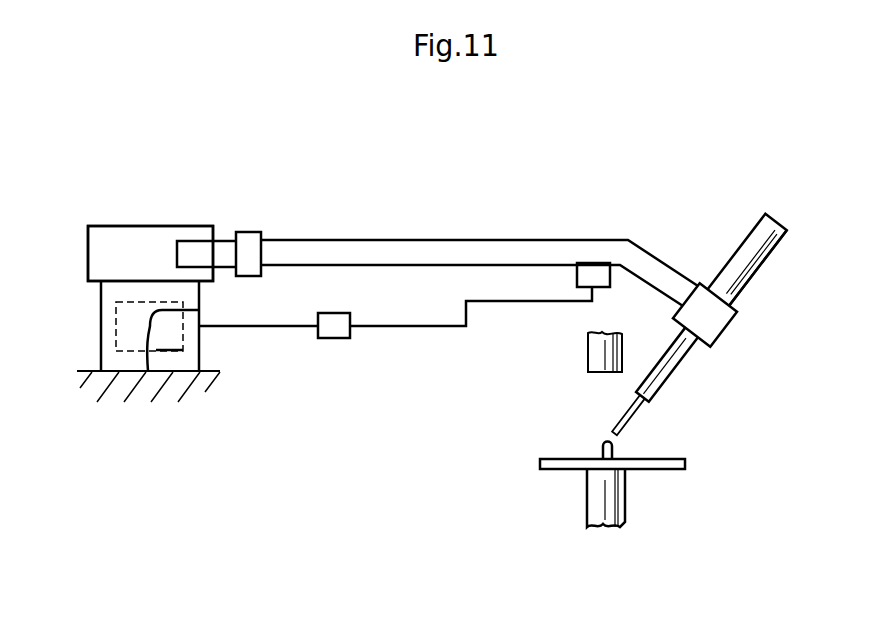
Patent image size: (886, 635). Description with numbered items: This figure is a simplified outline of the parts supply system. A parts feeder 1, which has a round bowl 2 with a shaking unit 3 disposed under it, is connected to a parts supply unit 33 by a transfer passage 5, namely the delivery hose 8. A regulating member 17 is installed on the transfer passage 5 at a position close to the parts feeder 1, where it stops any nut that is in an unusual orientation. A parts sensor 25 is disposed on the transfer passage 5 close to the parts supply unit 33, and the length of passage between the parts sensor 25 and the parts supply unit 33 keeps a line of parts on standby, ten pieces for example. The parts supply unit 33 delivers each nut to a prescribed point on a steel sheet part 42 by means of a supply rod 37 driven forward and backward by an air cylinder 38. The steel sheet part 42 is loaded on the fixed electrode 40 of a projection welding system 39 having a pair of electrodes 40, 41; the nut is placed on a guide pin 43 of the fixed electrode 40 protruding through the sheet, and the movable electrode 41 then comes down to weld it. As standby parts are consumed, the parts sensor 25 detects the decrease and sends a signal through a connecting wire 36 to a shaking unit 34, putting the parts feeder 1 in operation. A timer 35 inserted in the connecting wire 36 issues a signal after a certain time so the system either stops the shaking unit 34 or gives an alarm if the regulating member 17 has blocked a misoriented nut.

The parts feeder 1 is at (113, 218).
The round bowl 2 is at (88, 245).
The shaking unit 3 is at (101, 313).
The parts transfer passage 5 is at (224, 246).
The delivery hose 8 is at (508, 240).
The regulating member 17 is at (250, 232).
The parts sensor 25 is at (577, 278).
The parts supply unit 33 is at (740, 234).
The shaking unit 34 is at (176, 352).
The timer 35 is at (334, 338).
The connecting wire 36 is at (257, 327).
The supply rod 37 is at (676, 376).
The air cylinder 38 is at (771, 260).
The projection welding system 39 is at (533, 403).
The fixed electrode 40 is at (590, 516).
The movable electrode 41 is at (588, 352).
The steel sheet part 42 is at (663, 471).
The guide pin 43 is at (600, 449).